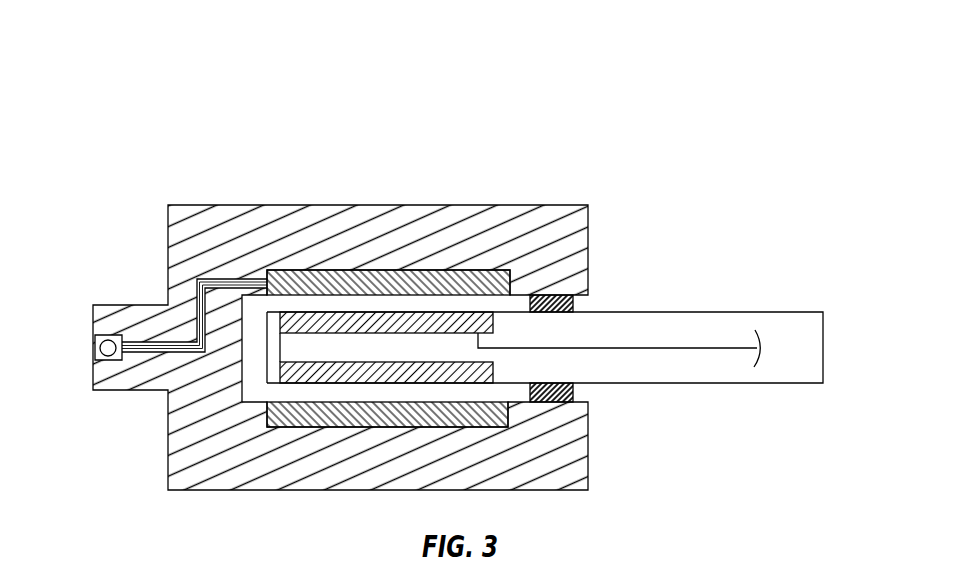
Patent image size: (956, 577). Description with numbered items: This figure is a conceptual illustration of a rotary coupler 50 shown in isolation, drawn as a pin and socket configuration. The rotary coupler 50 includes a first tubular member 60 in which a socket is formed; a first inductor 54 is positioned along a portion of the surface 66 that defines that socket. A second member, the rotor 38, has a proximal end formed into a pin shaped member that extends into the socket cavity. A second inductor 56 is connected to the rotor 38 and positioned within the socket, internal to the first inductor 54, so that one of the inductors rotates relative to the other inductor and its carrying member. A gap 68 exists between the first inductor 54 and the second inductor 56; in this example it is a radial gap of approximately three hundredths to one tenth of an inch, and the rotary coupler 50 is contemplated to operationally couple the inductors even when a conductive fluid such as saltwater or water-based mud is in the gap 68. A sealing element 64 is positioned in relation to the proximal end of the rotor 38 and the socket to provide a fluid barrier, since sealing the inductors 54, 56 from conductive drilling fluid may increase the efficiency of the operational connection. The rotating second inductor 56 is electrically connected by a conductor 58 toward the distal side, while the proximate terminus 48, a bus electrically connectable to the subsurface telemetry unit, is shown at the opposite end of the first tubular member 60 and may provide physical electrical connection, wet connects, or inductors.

The rotary coupler 50 is at (510, 114).
The first tubular member 60 is at (221, 218).
The proximate terminus 48 is at (96, 346).
The surface 66 is at (243, 313).
The first inductor 54 is at (390, 278).
The second inductor 56 is at (315, 402).
The gap 68 is at (514, 298).
The sealing element 64 is at (570, 304).
The rotor 38 is at (805, 320).
The conductor 58 is at (707, 348).